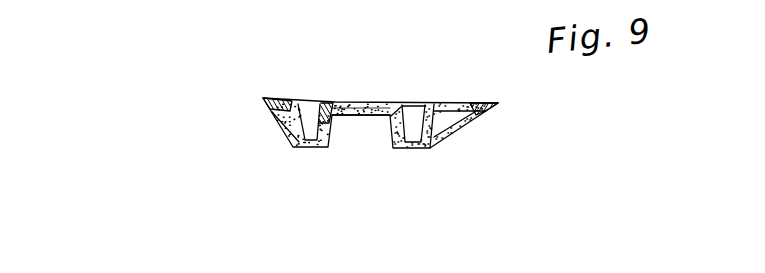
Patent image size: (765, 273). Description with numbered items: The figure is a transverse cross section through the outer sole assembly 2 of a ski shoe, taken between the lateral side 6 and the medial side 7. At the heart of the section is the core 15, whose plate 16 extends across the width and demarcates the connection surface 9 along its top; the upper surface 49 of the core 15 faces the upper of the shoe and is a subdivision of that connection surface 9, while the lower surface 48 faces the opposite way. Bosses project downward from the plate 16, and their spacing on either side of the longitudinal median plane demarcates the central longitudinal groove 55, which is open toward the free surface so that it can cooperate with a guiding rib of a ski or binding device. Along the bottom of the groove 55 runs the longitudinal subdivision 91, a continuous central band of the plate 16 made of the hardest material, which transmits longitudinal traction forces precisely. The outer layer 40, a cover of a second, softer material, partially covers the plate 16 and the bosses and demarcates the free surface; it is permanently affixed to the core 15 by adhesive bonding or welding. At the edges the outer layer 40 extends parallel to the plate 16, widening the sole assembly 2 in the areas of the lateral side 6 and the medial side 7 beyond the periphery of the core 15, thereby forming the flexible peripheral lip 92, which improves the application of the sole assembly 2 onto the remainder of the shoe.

The outer sole assembly 2 is at (227, 113).
The lateral side 6 is at (262, 99).
The plate 16 is at (295, 104).
The upper surface 49 is at (325, 102).
The connection surface 9 is at (367, 105).
The longitudinal subdivision 91 is at (391, 108).
The core 15 is at (453, 93).
The medial side 7 is at (498, 103).
The flexible peripheral lip 92 is at (487, 113).
The lower surface 48 is at (322, 140).
The central longitudinal groove 55 is at (357, 130).
The outer layer 40 is at (389, 136).